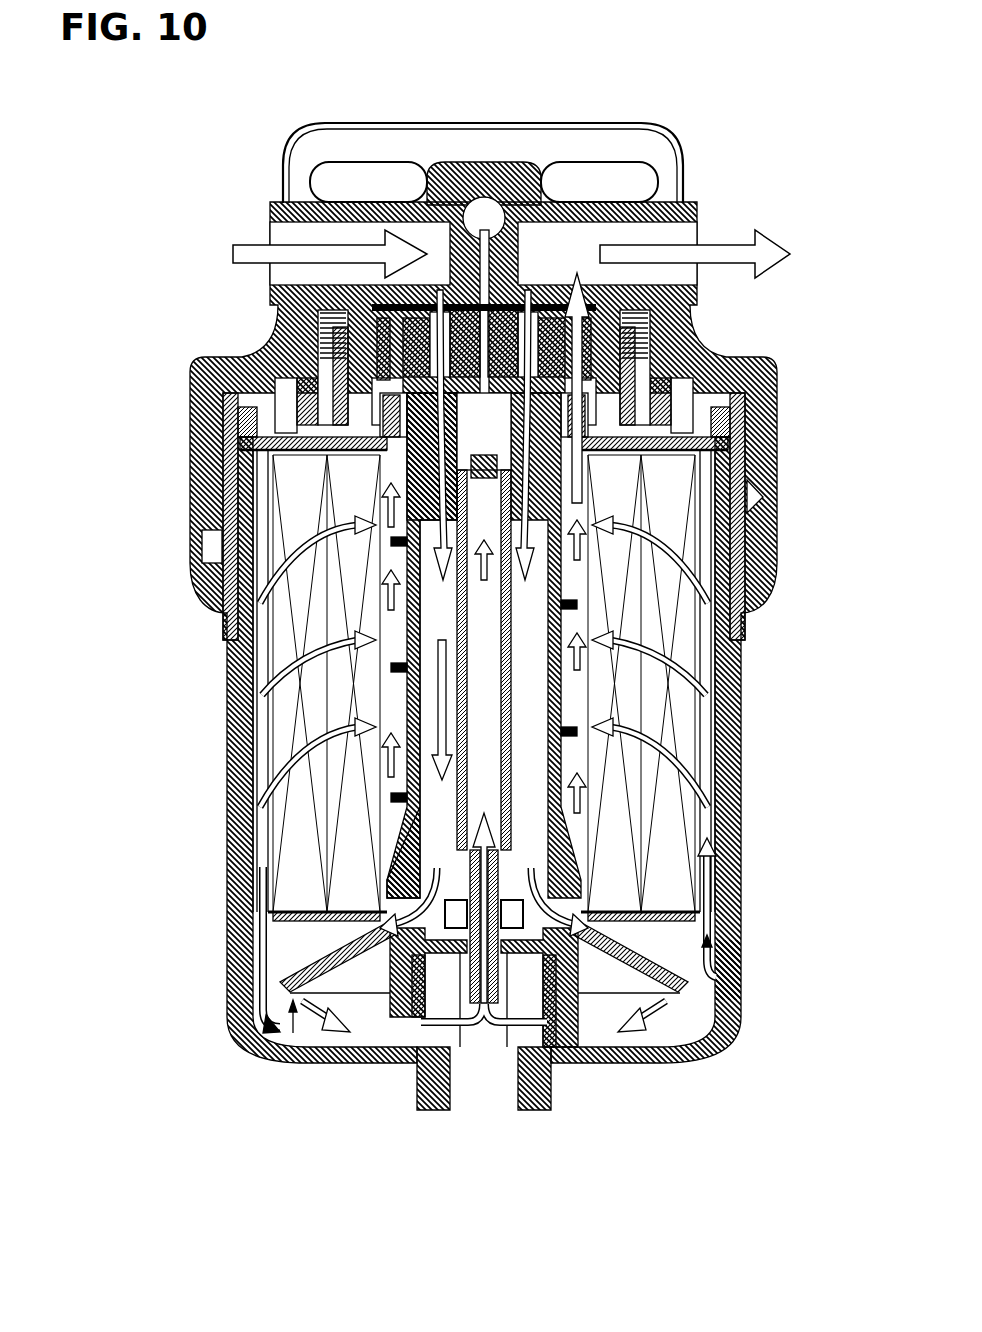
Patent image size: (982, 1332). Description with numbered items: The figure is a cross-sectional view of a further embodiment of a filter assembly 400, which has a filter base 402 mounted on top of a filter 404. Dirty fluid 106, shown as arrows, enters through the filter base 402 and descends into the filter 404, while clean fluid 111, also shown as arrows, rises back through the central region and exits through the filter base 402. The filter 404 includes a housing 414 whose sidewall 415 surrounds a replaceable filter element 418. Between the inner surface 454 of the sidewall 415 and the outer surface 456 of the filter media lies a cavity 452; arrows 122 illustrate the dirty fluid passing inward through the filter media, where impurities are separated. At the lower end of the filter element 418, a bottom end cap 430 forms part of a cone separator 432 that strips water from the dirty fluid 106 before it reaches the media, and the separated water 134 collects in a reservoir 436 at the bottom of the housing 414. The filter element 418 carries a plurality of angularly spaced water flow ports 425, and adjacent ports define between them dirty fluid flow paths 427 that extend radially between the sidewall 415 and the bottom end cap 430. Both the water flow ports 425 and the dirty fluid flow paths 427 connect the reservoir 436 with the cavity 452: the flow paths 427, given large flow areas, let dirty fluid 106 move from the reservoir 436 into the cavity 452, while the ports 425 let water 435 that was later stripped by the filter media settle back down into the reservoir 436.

The filter assembly 400 is at (148, 153).
The filter base 402 is at (278, 322).
The filter 404 is at (133, 712).
The dirty fluid 106 is at (700, 352).
The clean fluid 111 is at (580, 664).
The arrows indicating flow through filter media 122 is at (690, 749).
The separated water 134 is at (347, 1040).
The housing 414 is at (228, 826).
The sidewall 415 is at (740, 715).
The filter element 418 is at (258, 761).
The water flow ports 425 is at (230, 944).
The dirty fluid flow paths 427 is at (740, 968).
The bottom end cap 430 is at (663, 893).
The cone separator 432 is at (298, 1060).
The water 435 is at (258, 871).
The reservoir 436 is at (605, 1040).
The cavity 452 is at (229, 745).
The inner surface of sidewall 454 is at (265, 640).
The outer surface of filter media 456 is at (265, 680).